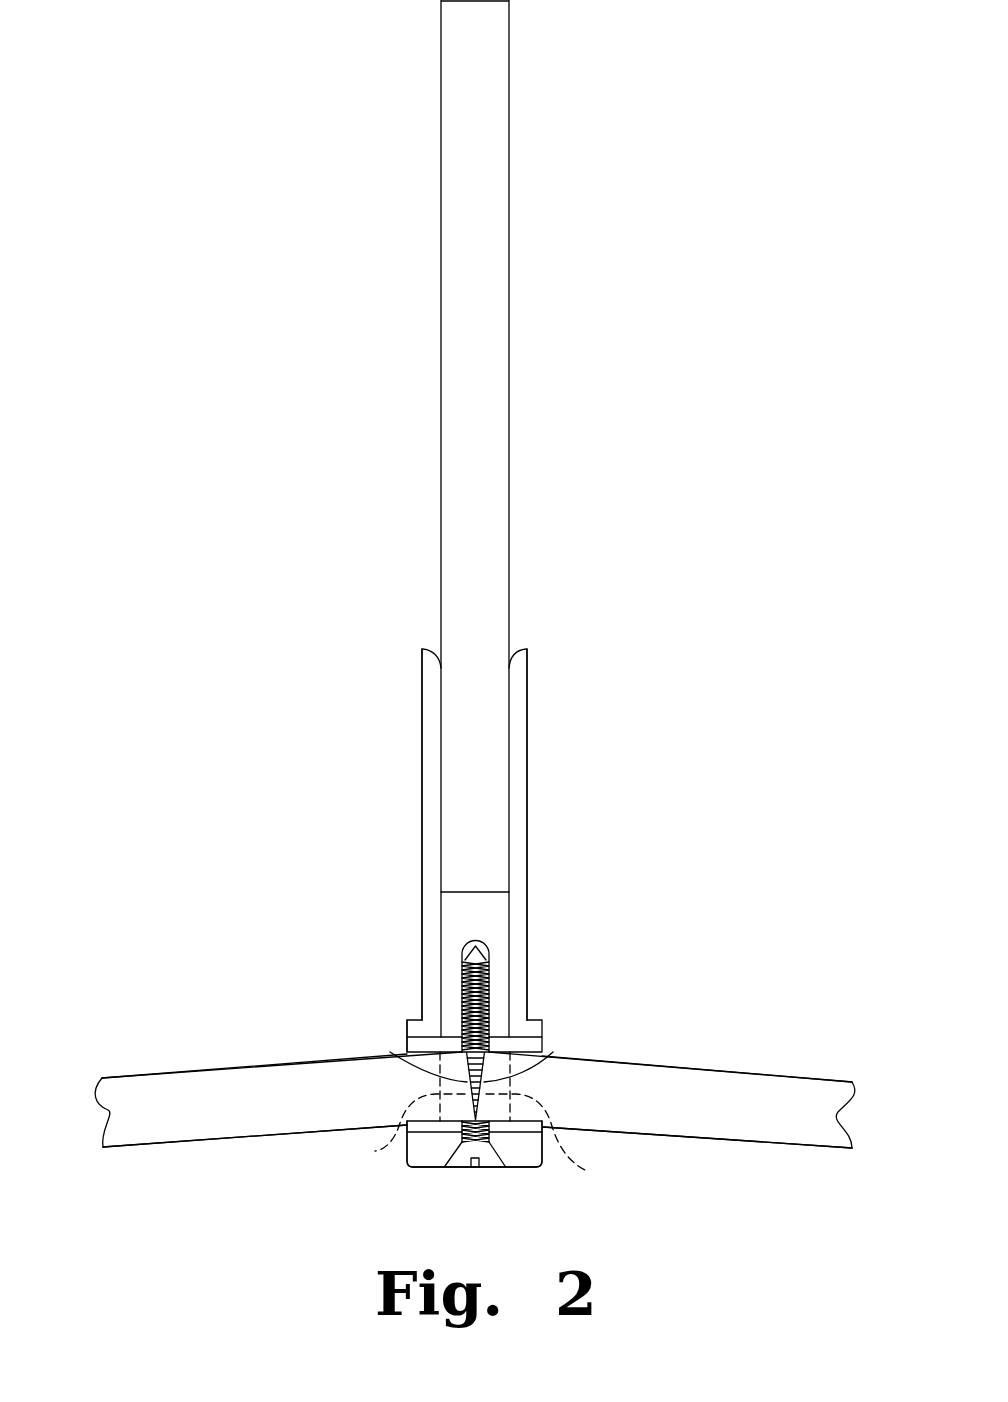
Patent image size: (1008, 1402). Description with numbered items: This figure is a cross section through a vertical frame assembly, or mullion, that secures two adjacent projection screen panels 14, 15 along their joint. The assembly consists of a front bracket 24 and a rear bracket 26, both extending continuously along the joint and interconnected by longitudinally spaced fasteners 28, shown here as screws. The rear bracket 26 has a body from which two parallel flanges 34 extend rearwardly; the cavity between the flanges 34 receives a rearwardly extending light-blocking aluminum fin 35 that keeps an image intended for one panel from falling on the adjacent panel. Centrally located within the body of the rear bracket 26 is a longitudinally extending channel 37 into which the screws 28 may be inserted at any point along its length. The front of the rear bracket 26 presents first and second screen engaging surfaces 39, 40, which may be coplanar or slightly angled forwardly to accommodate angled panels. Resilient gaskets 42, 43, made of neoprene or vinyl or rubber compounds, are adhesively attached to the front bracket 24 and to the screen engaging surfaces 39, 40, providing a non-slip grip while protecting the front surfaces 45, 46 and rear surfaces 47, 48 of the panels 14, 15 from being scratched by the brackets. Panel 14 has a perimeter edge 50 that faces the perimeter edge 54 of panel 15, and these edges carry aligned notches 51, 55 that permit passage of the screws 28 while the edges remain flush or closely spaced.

The screen panel 14 is at (122, 1112).
The screen panel 15 is at (838, 1114).
The front bracket 24 is at (398, 1172).
The rear bracket 26 is at (400, 862).
The fastener 28 is at (488, 1168).
The flange 34 is at (422, 703).
The fin 35 is at (457, 180).
The channel 37 is at (478, 940).
The first screen engaging surface 39 is at (443, 1035).
The second screen engaging surface 40 is at (506, 1035).
The resilient gasket 42 is at (407, 1047).
The resilient gasket 43 is at (543, 1128).
The front surface 45 is at (233, 1137).
The front surface 46 is at (717, 1140).
The rear surface 47 is at (177, 1066).
The rear surface 48 is at (773, 1072).
The perimeter edge 50 is at (390, 1052).
The notch 51 is at (375, 1151).
The perimeter edge 54 is at (553, 1052).
The notch 55 is at (585, 1170).